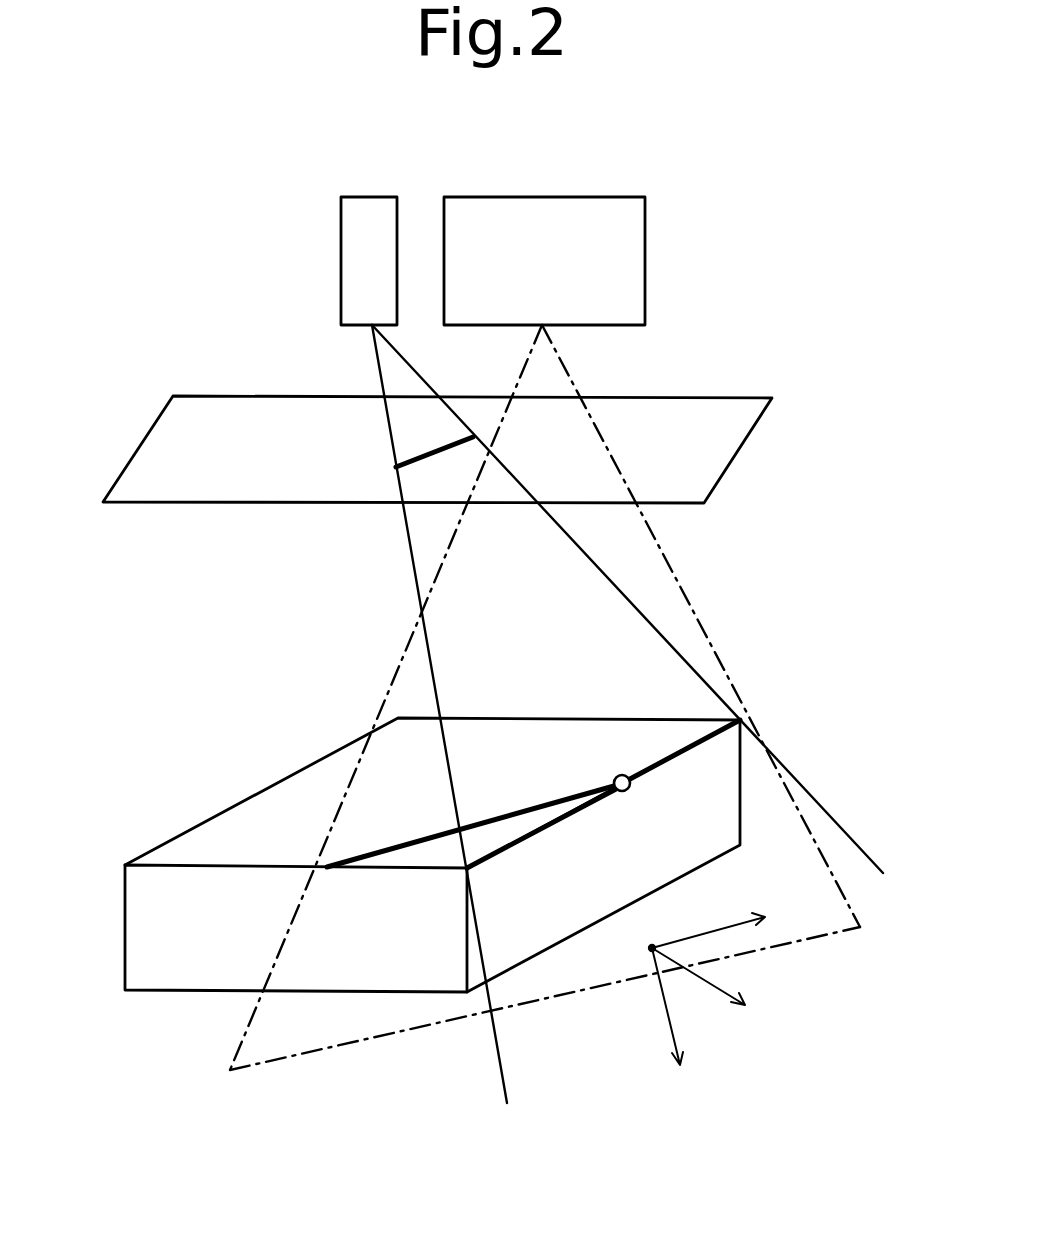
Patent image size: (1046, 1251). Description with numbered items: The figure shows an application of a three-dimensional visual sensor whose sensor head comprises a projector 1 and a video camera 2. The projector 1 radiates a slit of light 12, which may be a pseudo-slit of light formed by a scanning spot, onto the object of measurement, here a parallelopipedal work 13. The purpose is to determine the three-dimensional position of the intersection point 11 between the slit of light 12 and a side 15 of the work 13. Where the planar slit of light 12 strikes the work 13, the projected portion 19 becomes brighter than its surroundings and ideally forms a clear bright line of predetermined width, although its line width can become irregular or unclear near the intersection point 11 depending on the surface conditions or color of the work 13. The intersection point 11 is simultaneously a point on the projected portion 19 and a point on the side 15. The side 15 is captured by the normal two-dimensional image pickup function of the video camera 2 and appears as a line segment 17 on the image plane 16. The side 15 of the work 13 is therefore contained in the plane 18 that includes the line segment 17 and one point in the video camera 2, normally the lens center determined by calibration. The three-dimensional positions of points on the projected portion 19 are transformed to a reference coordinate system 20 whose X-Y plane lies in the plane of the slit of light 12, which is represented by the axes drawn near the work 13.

The projector 1 is at (475, 205).
The video camera 2 is at (355, 203).
The intersection point 11 is at (622, 775).
The slit of light 12 is at (693, 602).
The work 13 is at (240, 817).
The side 15 is at (700, 758).
The image plane 16 is at (697, 405).
The line segment 17 is at (428, 448).
The plane 18 is at (840, 825).
The projected portion 19 is at (543, 797).
The coordinate system 20 is at (620, 1004).